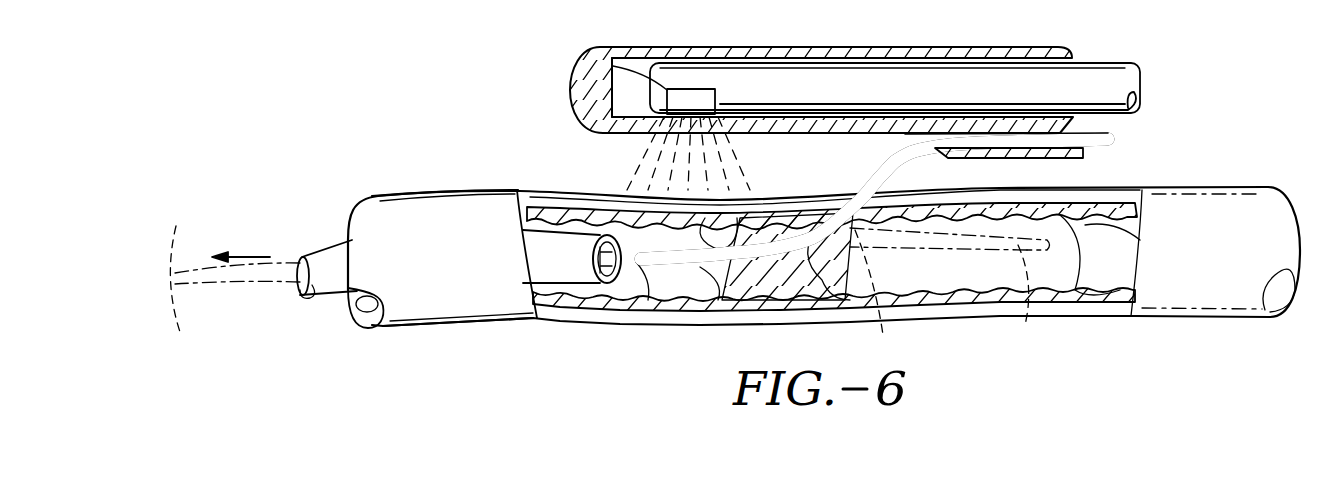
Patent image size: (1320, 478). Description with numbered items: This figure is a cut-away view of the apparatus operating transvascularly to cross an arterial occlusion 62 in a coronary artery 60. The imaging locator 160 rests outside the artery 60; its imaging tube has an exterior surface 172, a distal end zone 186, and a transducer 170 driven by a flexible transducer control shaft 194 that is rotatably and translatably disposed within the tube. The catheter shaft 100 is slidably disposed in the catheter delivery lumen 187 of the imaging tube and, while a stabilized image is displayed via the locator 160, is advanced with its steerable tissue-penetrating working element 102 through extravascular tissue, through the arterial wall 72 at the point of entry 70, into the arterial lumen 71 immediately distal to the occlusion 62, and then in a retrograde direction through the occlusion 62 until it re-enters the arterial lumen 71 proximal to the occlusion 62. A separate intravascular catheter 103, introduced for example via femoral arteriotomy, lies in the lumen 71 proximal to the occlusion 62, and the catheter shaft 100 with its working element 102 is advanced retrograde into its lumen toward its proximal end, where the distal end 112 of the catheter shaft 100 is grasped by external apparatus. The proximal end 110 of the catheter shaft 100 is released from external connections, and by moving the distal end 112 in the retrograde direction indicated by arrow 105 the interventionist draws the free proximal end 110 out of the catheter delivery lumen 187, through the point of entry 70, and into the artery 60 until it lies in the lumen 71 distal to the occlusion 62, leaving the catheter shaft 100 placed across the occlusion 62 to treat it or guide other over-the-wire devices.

The coronary artery 60 is at (1253, 186).
The occlusion 62 is at (733, 320).
The point of entry 70 is at (862, 193).
The arterial lumen 71 is at (640, 285).
The arterial wall 72 is at (542, 188).
The catheter shaft 100 is at (1012, 145).
The working element 102 is at (657, 365).
The separate intravascular catheter 103 is at (540, 255).
The arrow 105 is at (241, 247).
The proximal end of the catheter shaft 110 is at (1115, 138).
The distal end of the catheter shaft 112 is at (700, 348).
The imaging locator 160 is at (800, 47).
The transducer 170 is at (610, 62).
The exterior surface 172 is at (640, 47).
The distal end zone 186 is at (700, 47).
The catheter delivery lumen 187 is at (1133, 118).
The transducer control shaft 194 is at (1110, 61).